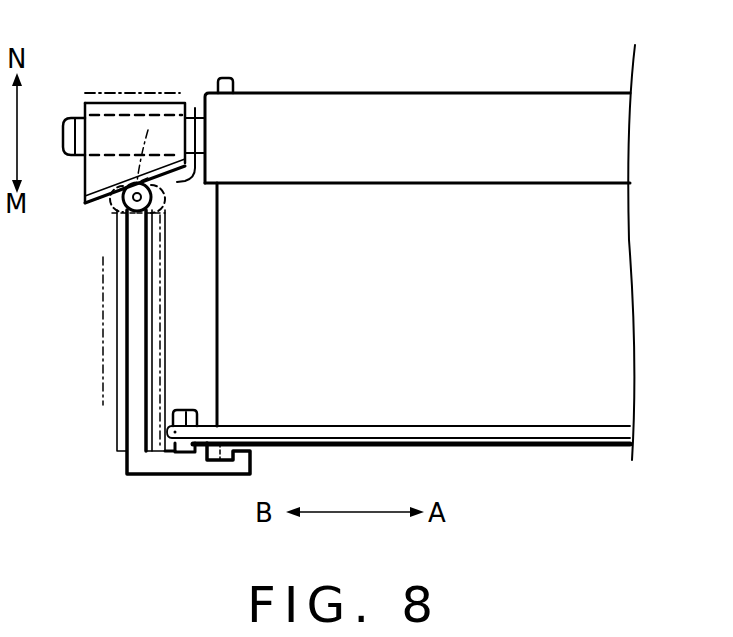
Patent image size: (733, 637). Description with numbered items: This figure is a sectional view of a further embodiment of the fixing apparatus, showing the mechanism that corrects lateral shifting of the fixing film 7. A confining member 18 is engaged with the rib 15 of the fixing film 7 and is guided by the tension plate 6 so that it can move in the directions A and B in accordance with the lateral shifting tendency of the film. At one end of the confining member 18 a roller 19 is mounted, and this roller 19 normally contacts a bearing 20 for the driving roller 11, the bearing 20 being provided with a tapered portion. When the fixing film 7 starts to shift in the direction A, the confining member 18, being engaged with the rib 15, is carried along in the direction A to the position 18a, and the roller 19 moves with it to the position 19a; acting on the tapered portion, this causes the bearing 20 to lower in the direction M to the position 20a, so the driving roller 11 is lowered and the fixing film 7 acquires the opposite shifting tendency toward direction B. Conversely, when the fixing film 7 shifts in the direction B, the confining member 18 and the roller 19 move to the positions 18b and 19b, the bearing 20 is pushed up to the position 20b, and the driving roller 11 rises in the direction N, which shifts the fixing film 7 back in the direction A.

The tension plate 6 is at (568, 437).
The fixing film 7 is at (536, 447).
The driving roller 11 is at (318, 112).
The rib 15 is at (218, 462).
The confining member 18 is at (150, 474).
The position of confining member 18a is at (160, 355).
The position of confining member 18b is at (103, 405).
The roller 19 is at (123, 215).
The position of roller 19a is at (160, 215).
The position of roller 19b is at (105, 210).
The bearing 20 is at (132, 102).
The position of bearing 20a is at (195, 108).
The position of bearing 20b is at (148, 130).